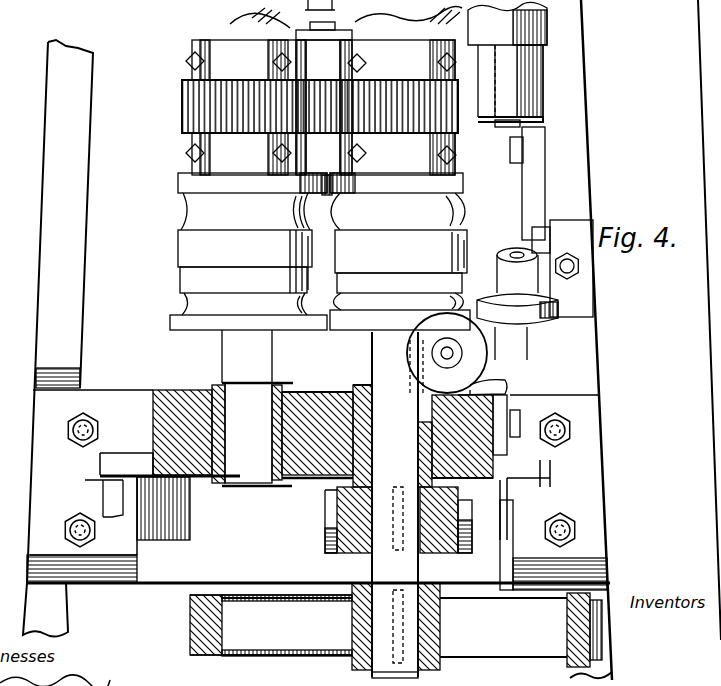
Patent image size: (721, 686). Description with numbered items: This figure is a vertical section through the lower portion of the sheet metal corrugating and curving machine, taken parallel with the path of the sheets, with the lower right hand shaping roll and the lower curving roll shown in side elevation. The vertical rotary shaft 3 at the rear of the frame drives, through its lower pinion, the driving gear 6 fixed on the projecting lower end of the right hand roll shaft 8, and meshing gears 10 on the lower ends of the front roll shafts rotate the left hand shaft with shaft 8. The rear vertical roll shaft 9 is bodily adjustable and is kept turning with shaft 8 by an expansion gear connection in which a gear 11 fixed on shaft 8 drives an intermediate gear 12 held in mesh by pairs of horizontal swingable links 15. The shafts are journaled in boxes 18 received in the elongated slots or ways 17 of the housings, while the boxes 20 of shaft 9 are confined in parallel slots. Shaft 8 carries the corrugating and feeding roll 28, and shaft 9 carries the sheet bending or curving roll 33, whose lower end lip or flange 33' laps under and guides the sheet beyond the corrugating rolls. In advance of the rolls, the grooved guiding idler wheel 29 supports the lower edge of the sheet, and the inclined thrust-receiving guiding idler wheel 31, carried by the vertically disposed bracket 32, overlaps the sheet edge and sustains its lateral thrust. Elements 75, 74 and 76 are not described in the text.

The vertical rotary shaft 3 is at (78, 150).
The horizontally elongated slots or ways 17 is at (582, 82).
The hub flange 75 is at (226, 52).
The intermediate gear 12 is at (352, 155).
The horizontal swingable links 15 is at (368, 63).
The gear 74 is at (192, 108).
The gear 11 is at (452, 122).
The sheet bending or curving roll 33 is at (248, 251).
The corrugating and feeding roll 28 is at (400, 251).
The lower end lip or flange 33' is at (211, 356).
The boxes 20 is at (206, 388).
The vertical roll shaft 9 is at (257, 434).
The bearing cap 76 is at (316, 396).
The boxes 18 is at (364, 438).
The right hand roll shaft 8 is at (395, 505).
The meshing gears 10 is at (443, 553).
The guiding idler wheel 29 is at (410, 356).
The thrust-receiving and guiding idler wheel 31 is at (516, 304).
The vertically disposed bracket 32 is at (540, 202).
The driving gear 6 is at (215, 652).